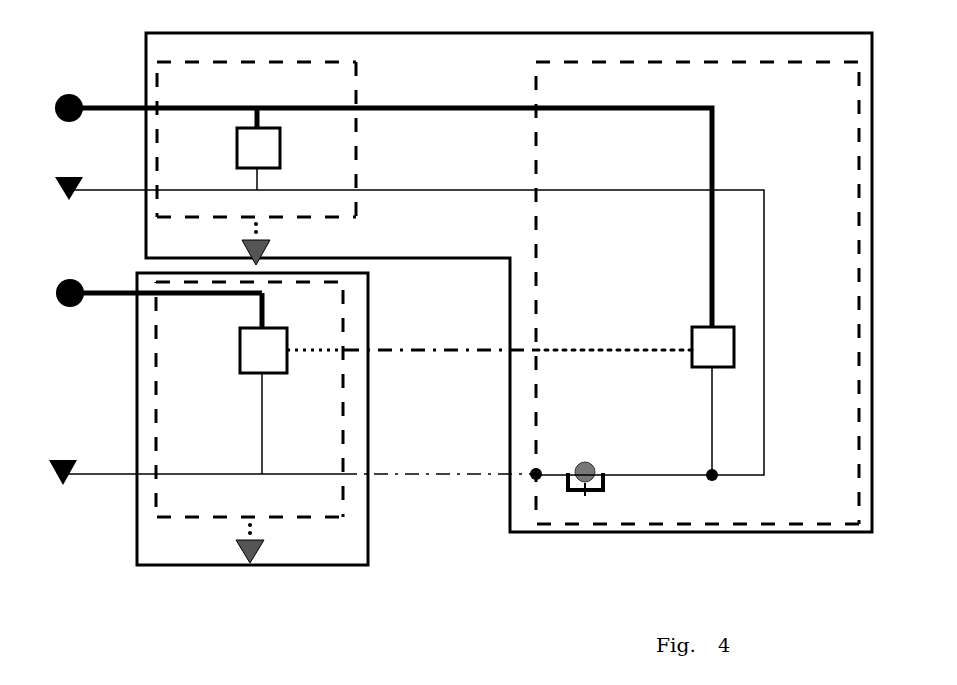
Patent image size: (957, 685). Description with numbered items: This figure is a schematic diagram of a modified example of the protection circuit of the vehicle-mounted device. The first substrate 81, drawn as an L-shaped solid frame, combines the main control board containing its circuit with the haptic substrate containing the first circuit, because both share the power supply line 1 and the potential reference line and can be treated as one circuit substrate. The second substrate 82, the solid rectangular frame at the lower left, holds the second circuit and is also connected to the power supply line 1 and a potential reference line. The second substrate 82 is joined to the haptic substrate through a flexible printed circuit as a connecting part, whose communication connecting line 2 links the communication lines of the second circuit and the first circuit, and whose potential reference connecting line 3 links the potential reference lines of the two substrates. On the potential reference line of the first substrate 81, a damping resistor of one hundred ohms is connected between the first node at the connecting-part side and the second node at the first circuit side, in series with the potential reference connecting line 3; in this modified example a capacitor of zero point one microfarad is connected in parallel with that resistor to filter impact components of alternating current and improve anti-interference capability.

The first substrate 81 is at (509, 282).
The second substrate 82 is at (252, 419).
The power supply line 1 is at (383, 210).
The communication connecting line 2 is at (489, 276).
The potential reference connecting line 3 is at (406, 381).